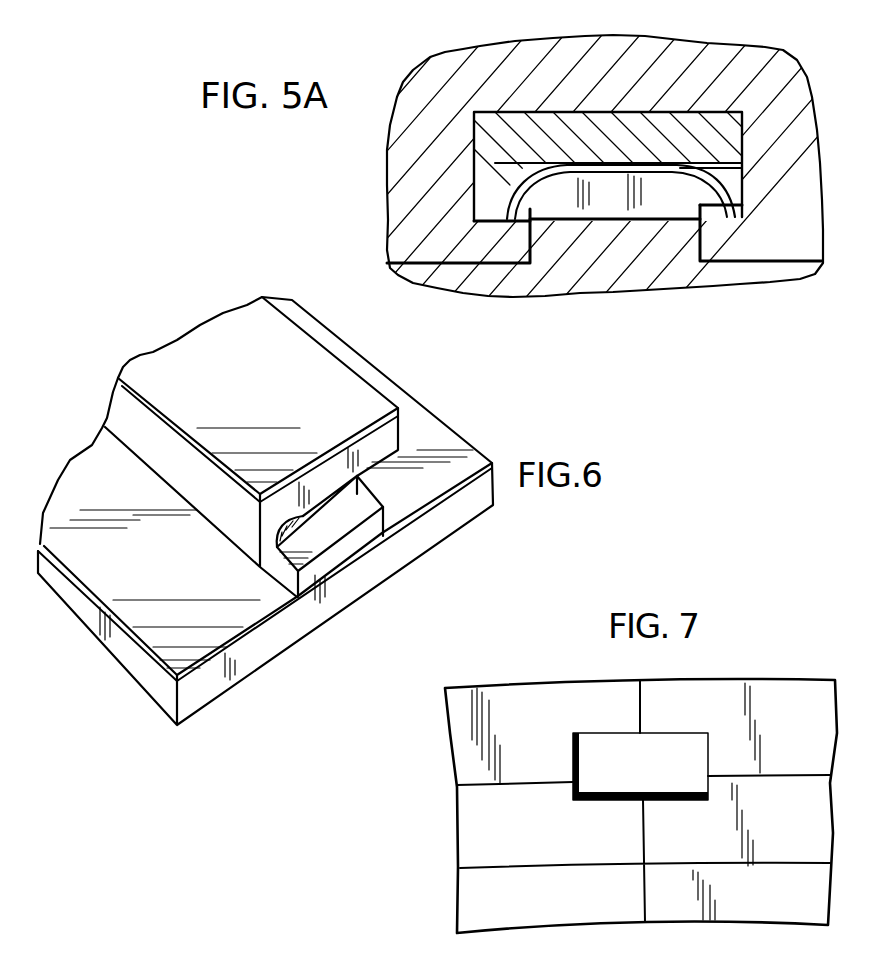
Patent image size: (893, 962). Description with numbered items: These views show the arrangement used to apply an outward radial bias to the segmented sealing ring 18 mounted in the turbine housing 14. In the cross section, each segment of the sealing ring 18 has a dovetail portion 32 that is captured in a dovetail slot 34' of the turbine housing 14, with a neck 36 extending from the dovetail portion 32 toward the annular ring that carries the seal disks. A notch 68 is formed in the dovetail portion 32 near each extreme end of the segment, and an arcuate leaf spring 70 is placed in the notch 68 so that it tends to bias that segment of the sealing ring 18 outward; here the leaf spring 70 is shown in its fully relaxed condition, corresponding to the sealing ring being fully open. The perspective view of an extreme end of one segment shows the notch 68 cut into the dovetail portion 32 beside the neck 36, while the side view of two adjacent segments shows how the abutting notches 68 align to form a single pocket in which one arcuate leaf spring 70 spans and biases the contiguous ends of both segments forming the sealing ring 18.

In FIG. 5A, the turbine housing 14 is at (693, 53).
In FIG. 5A, the sealing ring 18 is at (575, 311).
In FIG. 6, the sealing ring 18 is at (148, 725).
In FIG. 7, the sealing ring 18 is at (752, 675).
In FIG. 5A, the dovetail portion 32 is at (550, 125).
In FIG. 6, the dovetail portion 32 is at (370, 447).
In FIG. 5A, the dovetail slot 34' is at (596, 202).
In FIG. 5A, the neck 36 is at (663, 255).
In FIG. 6, the neck 36 is at (349, 552).
In FIG. 5A, the notch 68 is at (604, 234).
In FIG. 6, the notch 68 is at (417, 492).
In FIG. 7, the notch 68 is at (572, 747).
In FIG. 5A, the arcuate leaf spring 70 is at (533, 188).
In FIG. 7, the arcuate leaf spring 70 is at (650, 767).